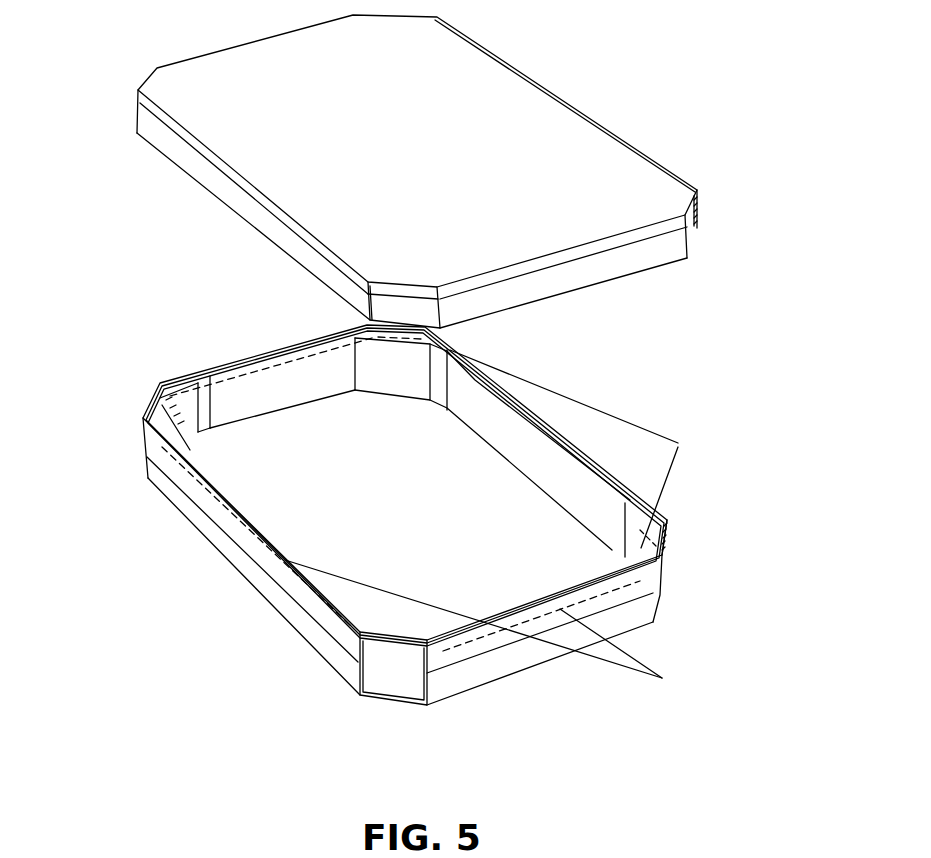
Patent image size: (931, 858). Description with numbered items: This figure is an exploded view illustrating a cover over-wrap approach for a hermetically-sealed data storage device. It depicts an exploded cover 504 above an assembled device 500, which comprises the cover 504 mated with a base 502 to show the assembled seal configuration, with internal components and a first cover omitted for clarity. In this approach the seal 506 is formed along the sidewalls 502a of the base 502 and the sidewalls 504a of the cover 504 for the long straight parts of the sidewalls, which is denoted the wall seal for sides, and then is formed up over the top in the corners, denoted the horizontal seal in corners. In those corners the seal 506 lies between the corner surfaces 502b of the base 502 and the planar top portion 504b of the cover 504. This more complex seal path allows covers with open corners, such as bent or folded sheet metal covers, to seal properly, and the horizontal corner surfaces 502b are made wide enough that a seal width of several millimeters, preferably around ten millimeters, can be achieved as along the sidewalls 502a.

The assembled device 500 is at (146, 325).
The base 502 is at (475, 672).
The sidewalls of the base 502a is at (310, 607).
The corner surfaces 502b is at (400, 637).
The cover 504 is at (652, 192).
The sidewalls of the cover 504a is at (250, 200).
The planar top portion 504b is at (470, 97).
The seal 506 is at (147, 403).